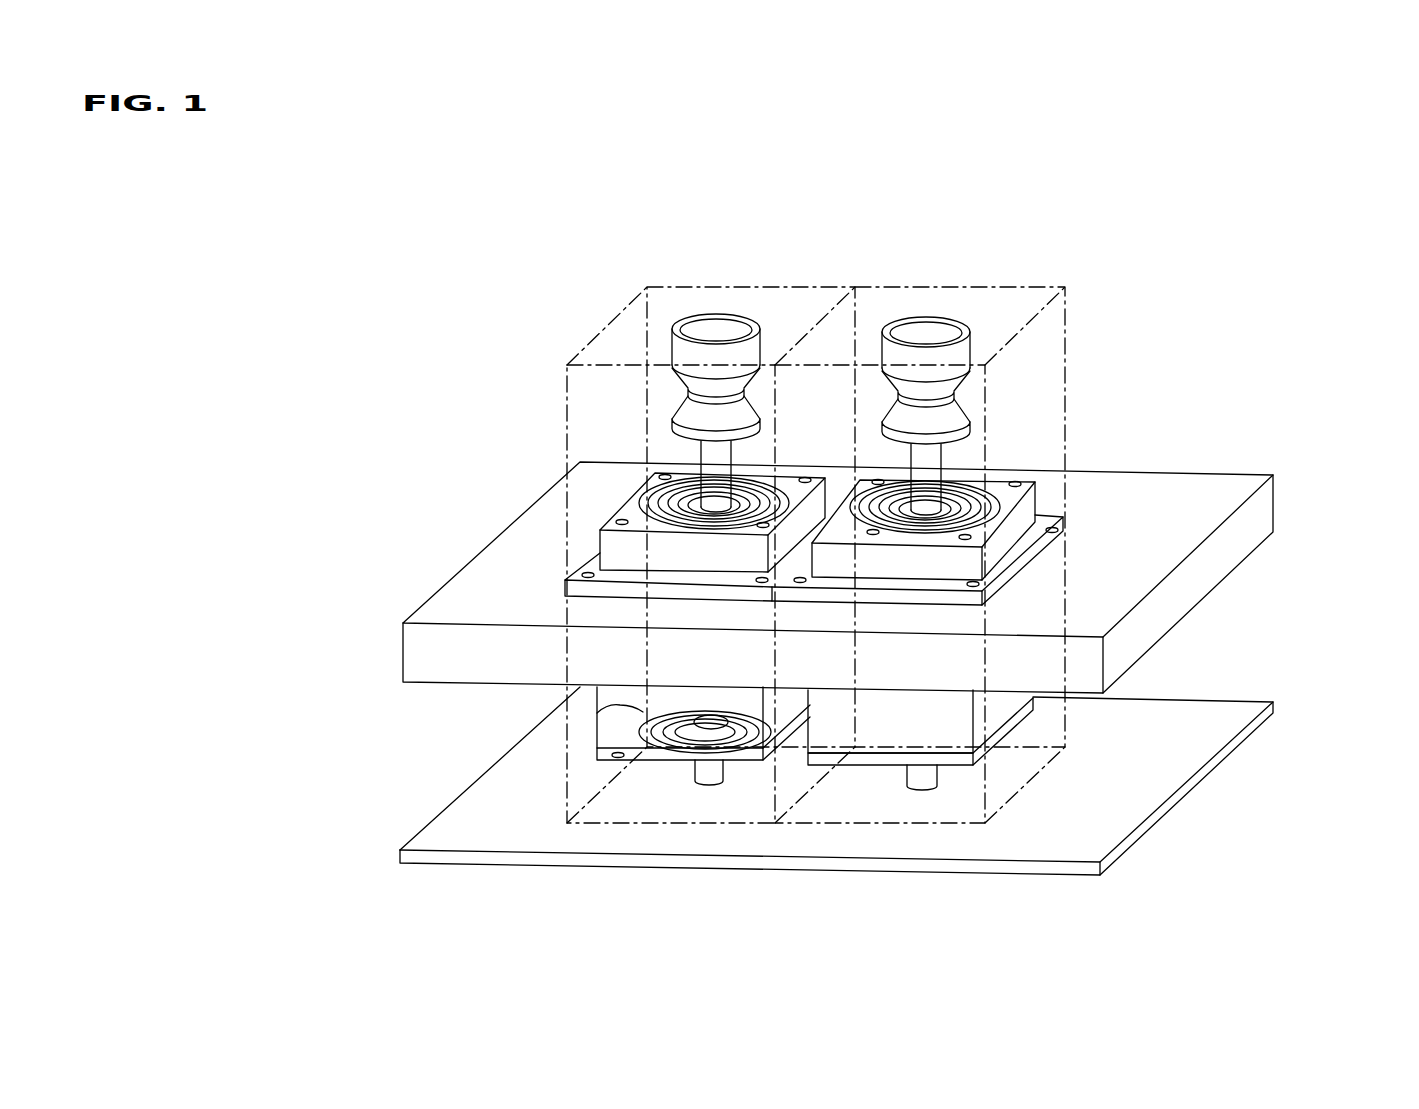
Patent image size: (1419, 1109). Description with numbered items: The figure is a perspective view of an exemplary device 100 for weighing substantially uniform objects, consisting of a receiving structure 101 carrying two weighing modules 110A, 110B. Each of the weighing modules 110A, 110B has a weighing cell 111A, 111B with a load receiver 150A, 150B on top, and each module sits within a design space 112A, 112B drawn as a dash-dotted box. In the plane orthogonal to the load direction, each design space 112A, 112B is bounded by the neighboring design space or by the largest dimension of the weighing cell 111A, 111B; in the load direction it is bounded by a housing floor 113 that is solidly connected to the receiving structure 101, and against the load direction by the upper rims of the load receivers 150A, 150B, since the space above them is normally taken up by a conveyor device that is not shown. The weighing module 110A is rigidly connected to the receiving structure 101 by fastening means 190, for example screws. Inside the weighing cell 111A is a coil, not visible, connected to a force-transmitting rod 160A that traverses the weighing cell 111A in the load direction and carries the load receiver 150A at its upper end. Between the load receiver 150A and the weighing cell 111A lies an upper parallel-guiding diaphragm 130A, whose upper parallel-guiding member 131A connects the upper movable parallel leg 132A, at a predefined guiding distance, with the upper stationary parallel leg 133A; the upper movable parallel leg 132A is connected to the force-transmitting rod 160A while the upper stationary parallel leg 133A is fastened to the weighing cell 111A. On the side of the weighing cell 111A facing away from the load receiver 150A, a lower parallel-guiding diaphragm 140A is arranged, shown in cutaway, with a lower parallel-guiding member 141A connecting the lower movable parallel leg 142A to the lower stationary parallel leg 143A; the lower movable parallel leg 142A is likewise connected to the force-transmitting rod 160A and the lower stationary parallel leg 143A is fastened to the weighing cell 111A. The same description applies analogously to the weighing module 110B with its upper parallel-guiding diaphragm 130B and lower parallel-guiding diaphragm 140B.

The device 100 is at (1205, 348).
The receiving structure 101 is at (1158, 512).
The housing floor 113 is at (1142, 757).
The weighing module 110A is at (692, 467).
The weighing module 110B is at (993, 467).
The design space 112A is at (624, 380).
The design space 112B is at (988, 365).
The upper parallel-guiding diaphragm 130A is at (596, 341).
The upper parallel-guiding diaphragm 130B is at (1022, 414).
The upper parallel-guiding member 131A is at (643, 494).
The upper movable parallel leg 132A is at (657, 474).
The upper stationary parallel leg 133A is at (637, 507).
The lower parallel-guiding diaphragm 140A is at (524, 756).
The lower parallel-guiding diaphragm 140B is at (965, 832).
The lower parallel-guiding member 141A is at (642, 750).
The lower movable parallel leg 142A is at (663, 713).
The lower stationary parallel leg 143A is at (622, 756).
The load receiver 150A is at (726, 353).
The load receiver 150B is at (930, 355).
The force-transmitting rod 160A is at (713, 478).
The fastening means 190 is at (572, 566).
The weighing cell 111A is at (750, 703).
The weighing cell 111B is at (917, 715).